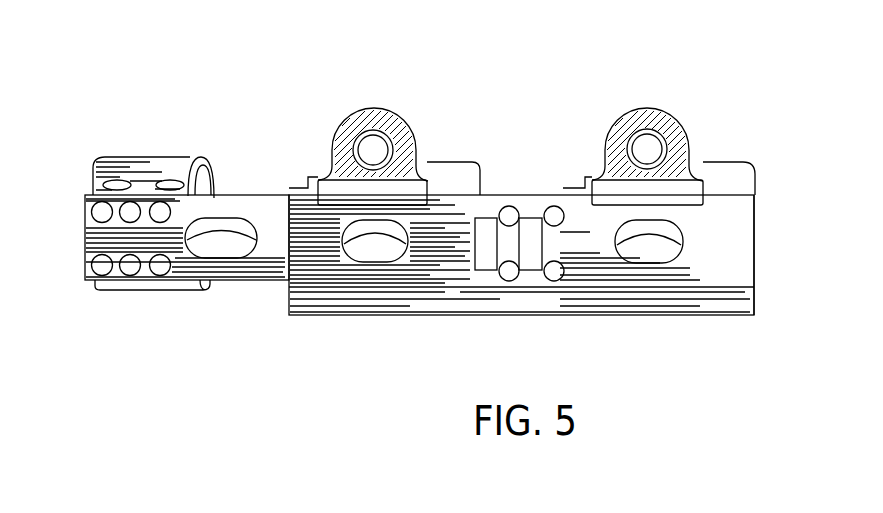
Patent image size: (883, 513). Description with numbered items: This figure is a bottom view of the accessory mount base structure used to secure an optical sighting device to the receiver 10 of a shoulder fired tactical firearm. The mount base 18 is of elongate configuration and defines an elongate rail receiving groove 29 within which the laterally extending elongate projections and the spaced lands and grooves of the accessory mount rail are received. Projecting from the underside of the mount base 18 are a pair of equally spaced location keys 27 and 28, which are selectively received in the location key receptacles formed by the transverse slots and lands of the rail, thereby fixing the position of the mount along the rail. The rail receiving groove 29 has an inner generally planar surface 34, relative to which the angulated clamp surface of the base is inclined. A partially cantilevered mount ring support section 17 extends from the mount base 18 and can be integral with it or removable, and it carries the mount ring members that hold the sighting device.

The receiver 10 is at (461, 188).
The mount ring support section 17 is at (213, 268).
The mount base 18 is at (563, 235).
The location key 27 is at (490, 258).
The location key 28 is at (536, 258).
The rail receiving groove 29 is at (755, 228).
The inner generally planar surface 34 is at (195, 252).